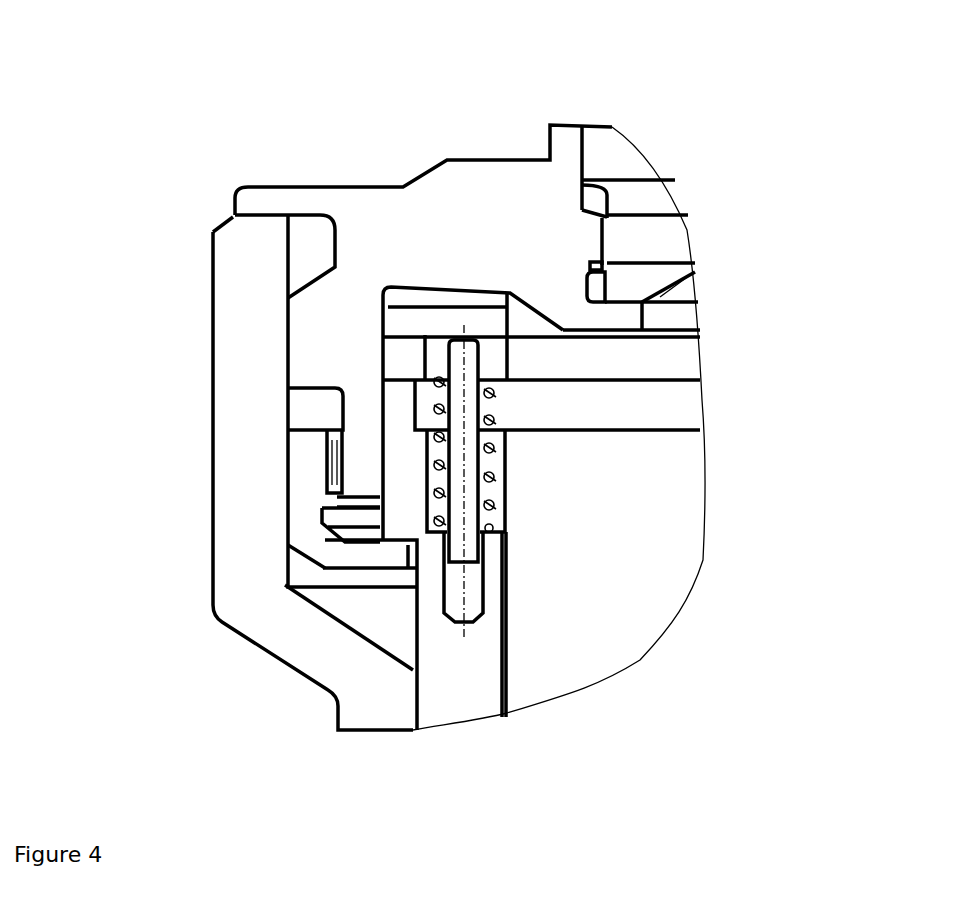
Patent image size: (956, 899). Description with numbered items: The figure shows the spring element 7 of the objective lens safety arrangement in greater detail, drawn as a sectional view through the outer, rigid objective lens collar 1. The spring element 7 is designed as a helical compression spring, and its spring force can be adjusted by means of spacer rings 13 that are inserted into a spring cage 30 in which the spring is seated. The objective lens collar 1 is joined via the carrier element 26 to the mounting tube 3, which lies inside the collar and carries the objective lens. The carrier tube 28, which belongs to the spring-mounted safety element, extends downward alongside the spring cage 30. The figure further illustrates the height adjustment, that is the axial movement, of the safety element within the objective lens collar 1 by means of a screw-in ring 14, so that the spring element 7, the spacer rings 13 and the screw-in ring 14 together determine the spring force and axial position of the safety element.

The objective lens collar 1 is at (233, 413).
The mounting tube 3 is at (638, 167).
The spring element 7 is at (505, 497).
The spacer rings 13 is at (407, 302).
The screw-in ring 14 is at (337, 553).
The carrier element 26 is at (458, 192).
The carrier tube 28 is at (467, 693).
The spring cage 30 is at (468, 358).